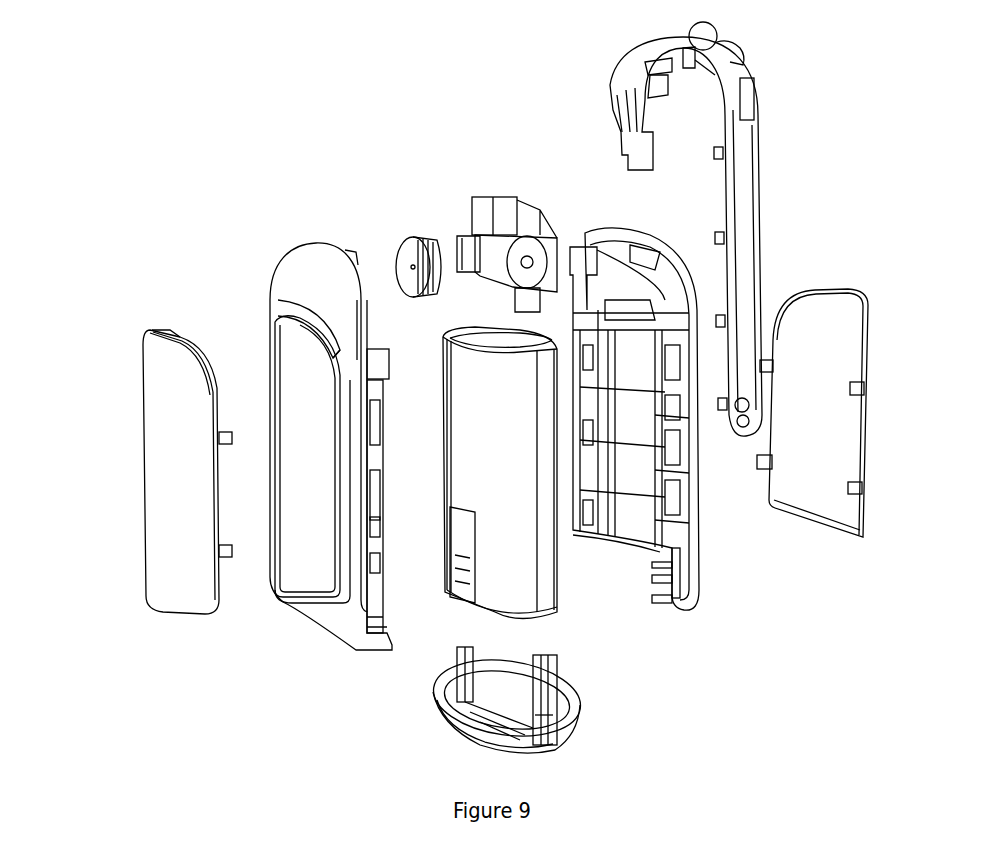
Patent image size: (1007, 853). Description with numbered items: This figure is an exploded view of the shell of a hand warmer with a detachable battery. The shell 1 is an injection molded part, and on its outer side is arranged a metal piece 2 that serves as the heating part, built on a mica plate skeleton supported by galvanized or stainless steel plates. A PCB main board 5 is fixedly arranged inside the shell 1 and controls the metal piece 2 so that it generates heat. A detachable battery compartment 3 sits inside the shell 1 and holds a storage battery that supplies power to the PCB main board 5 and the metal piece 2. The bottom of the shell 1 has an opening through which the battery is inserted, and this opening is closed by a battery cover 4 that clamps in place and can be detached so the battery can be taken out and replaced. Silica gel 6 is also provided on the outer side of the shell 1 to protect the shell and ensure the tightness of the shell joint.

The shell 1 is at (300, 285).
The metal piece 2 is at (170, 437).
The battery compartment 3 is at (537, 547).
The battery cover 4 is at (580, 724).
The PCB main board 5 is at (487, 212).
The silica gel 6 is at (748, 160).